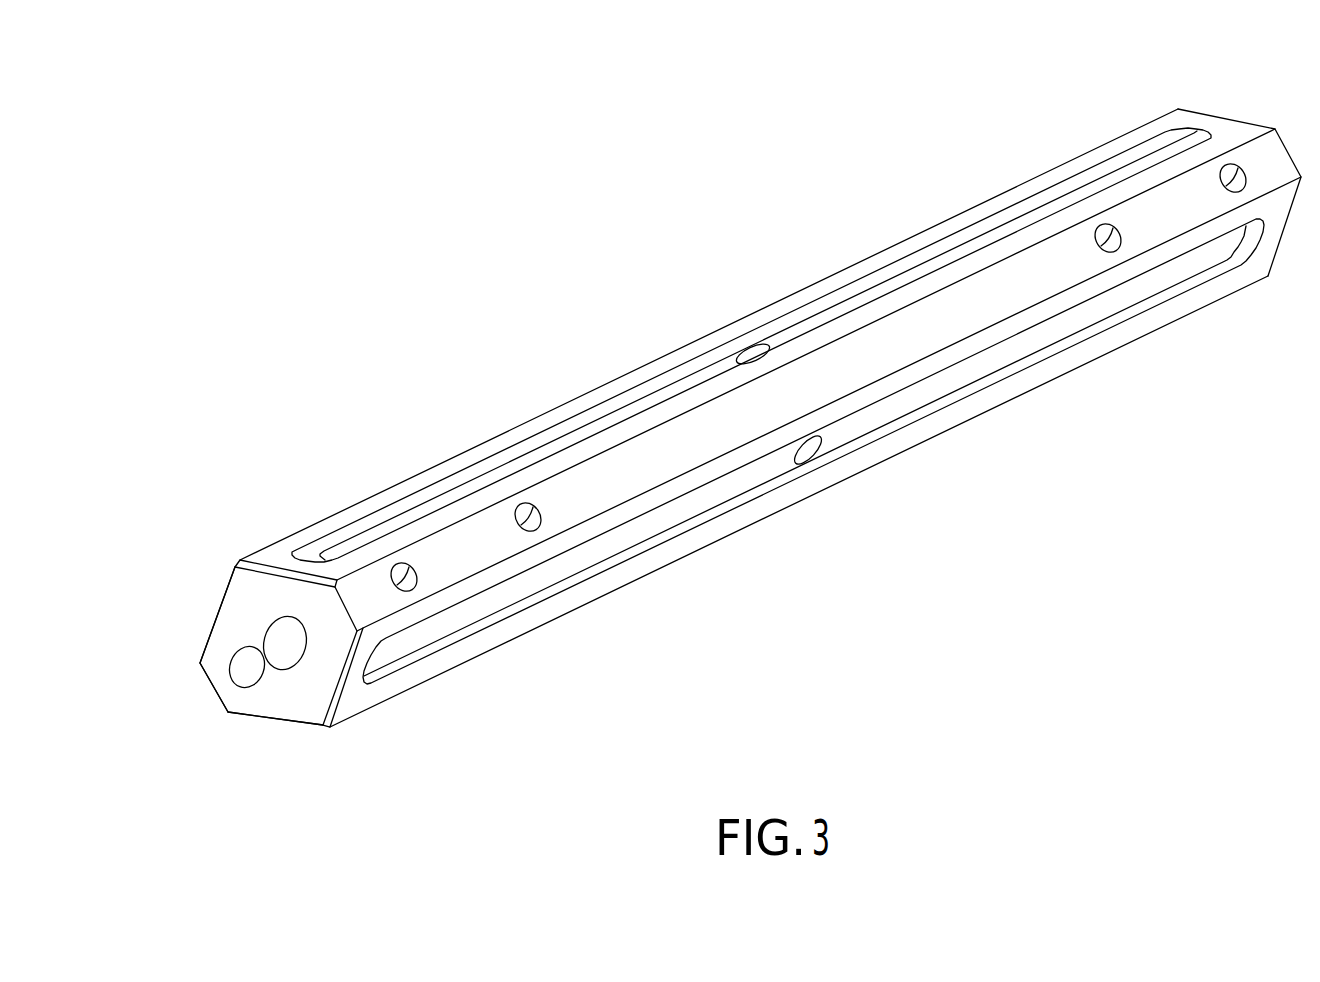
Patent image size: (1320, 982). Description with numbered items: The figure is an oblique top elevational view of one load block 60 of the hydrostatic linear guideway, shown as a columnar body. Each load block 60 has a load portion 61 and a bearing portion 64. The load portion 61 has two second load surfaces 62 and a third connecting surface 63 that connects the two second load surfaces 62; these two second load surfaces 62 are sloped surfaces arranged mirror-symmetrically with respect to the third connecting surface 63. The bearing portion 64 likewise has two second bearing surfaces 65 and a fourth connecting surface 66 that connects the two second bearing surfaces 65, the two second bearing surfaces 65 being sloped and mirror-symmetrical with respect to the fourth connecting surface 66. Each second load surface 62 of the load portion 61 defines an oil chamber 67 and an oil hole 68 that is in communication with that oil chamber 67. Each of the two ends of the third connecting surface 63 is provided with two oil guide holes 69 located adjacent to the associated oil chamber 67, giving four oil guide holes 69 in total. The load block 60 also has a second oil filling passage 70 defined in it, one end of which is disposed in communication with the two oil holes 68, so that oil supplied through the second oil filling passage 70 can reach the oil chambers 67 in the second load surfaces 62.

The load block 60 is at (937, 96).
The load portion 61 is at (325, 612).
The second load surface 62 is at (283, 553).
The third connecting surface 63 is at (469, 547).
The bearing portion 64 is at (227, 631).
The second bearing surface 65 is at (222, 606).
The fourth connecting surface 66 is at (212, 686).
The oil chamber 67 is at (896, 280).
The oil hole 68 is at (757, 350).
The oil guide hole 69 is at (1224, 176).
The second oil filling passage 70 is at (287, 655).